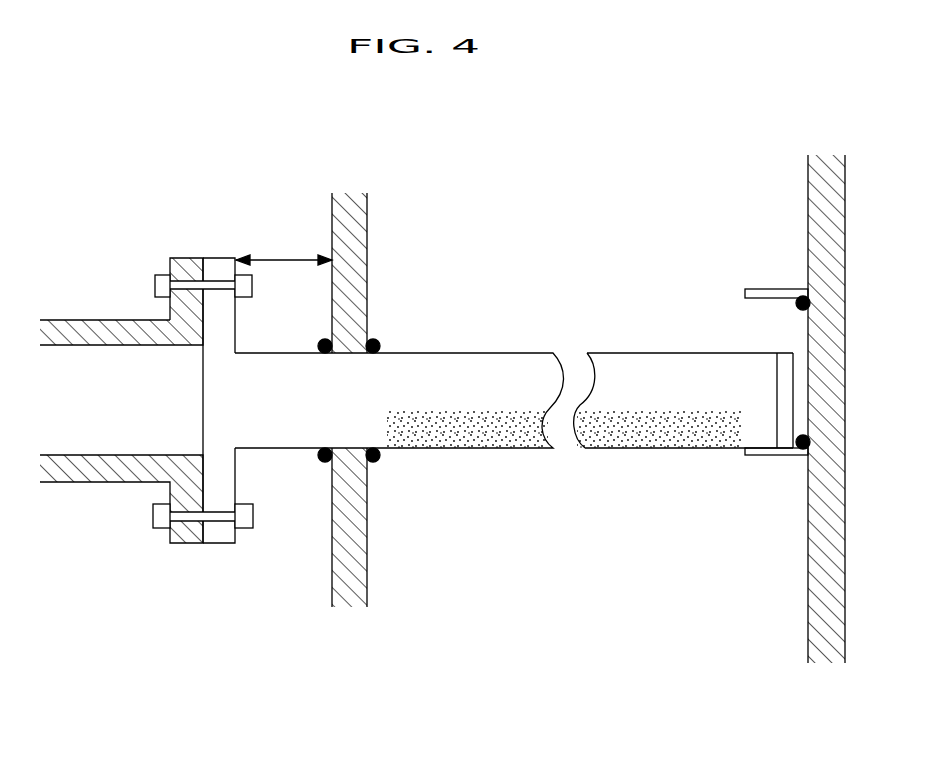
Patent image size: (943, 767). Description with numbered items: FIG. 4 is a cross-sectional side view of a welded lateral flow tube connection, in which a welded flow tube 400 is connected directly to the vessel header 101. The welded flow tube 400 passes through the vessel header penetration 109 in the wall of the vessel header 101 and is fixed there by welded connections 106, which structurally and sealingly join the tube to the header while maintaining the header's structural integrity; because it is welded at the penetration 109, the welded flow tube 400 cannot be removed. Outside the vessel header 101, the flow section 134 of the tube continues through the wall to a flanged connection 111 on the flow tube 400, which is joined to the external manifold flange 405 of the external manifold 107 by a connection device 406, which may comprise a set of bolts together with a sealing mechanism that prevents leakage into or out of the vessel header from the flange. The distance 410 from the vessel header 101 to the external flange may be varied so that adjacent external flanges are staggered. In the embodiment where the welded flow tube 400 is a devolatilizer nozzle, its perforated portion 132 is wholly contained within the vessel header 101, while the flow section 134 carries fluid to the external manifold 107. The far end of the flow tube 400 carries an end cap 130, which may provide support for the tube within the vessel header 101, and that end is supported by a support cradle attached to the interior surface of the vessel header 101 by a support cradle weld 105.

The vessel header 101 is at (368, 218).
The support cradle weld 105 is at (805, 457).
The welded connections 106 is at (322, 461).
The external manifold 107 is at (140, 320).
The vessel header penetration 109 is at (348, 447).
The flanged connection 111 is at (215, 543).
The end cap 130 is at (777, 368).
The perforated portion 132 is at (625, 433).
The flow section 134 is at (275, 370).
The welded flow tube 400 is at (477, 353).
The external manifold flange 405 is at (187, 543).
The connection device 406 is at (155, 290).
The distance 410 is at (280, 258).